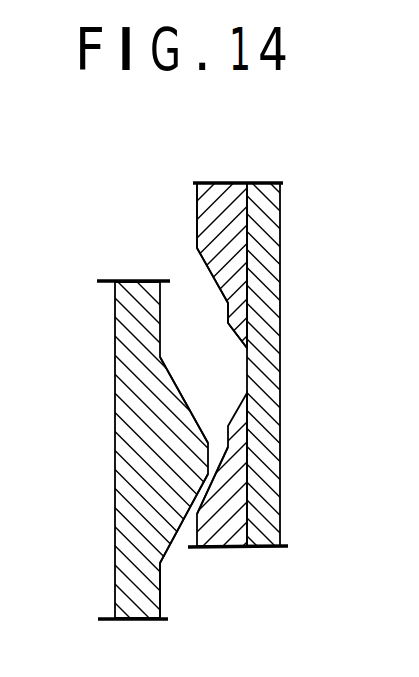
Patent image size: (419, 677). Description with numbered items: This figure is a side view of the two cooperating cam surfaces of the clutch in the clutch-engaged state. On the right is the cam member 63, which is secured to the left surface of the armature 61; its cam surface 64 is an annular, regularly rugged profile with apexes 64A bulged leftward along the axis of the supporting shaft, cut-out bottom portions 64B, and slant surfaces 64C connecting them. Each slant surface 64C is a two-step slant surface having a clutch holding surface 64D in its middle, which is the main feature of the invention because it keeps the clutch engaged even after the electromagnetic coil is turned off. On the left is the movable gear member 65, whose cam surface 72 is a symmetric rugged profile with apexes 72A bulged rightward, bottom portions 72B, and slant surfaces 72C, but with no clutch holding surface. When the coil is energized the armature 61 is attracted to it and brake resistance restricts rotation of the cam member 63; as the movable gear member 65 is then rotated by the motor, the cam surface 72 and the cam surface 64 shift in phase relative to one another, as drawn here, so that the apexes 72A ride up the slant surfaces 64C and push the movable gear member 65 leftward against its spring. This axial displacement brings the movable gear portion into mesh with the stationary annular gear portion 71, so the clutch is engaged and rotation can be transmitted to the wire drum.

The armature 61 is at (280, 262).
The cam member 63 is at (232, 205).
The cam surface 64 is at (197, 226).
The apexes 64A is at (197, 198).
The bottom portions 64B is at (253, 376).
The slant surfaces 64C is at (207, 462).
The clutch holding surface 64D is at (226, 320).
The movable gear member 65 is at (130, 352).
The stationary annular gear portion 71 is at (303, 561).
The cam surface 72 is at (168, 388).
The apexes 72A is at (208, 452).
The bottom portions 72B is at (162, 592).
The slant surfaces 72C is at (170, 530).